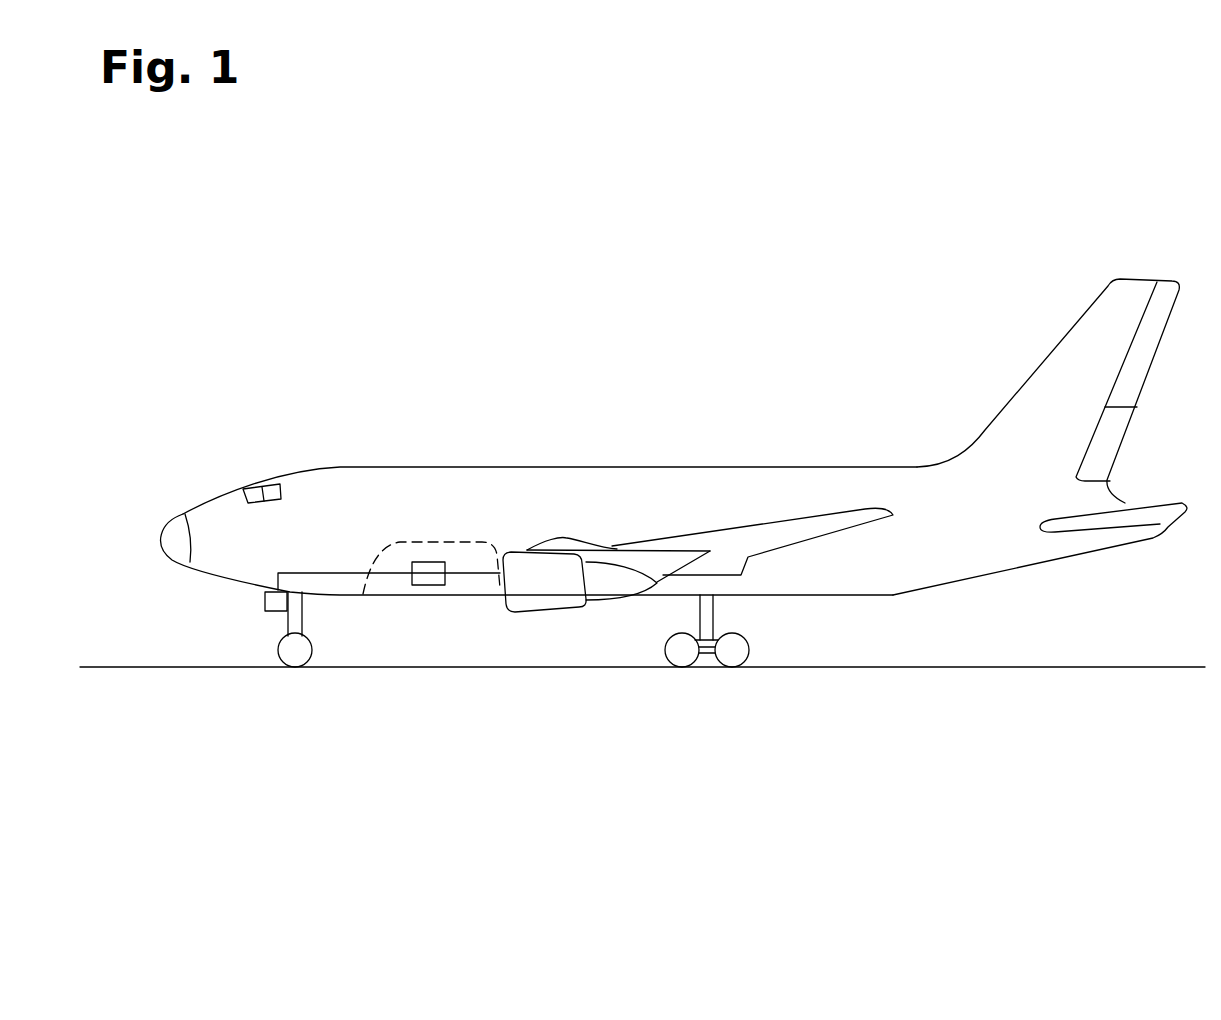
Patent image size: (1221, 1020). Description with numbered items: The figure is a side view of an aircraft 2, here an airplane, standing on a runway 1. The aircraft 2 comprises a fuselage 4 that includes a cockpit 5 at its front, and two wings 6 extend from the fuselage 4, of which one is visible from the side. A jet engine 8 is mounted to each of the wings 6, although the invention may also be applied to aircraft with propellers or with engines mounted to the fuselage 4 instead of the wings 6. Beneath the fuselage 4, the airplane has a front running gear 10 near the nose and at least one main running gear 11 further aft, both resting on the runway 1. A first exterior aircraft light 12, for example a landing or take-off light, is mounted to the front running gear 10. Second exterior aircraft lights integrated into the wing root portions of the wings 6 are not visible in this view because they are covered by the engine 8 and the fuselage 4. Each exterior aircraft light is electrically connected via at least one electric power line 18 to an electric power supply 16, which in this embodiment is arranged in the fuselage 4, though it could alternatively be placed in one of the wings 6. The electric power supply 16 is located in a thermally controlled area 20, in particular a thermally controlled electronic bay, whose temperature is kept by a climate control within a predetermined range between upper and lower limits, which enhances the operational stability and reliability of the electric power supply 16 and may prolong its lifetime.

The runway 1 is at (150, 669).
The aircraft 2 is at (909, 338).
The fuselage 4 is at (546, 495).
The cockpit 5 is at (238, 485).
The wing 6 is at (803, 525).
The jet engine 8 is at (535, 625).
The front running gear 10 is at (326, 665).
The main running gear 11 is at (652, 665).
The first exterior aircraft light 12 is at (266, 600).
The electric power supply 16 is at (434, 575).
The electric power line 18 is at (344, 573).
The thermally controlled area 20 is at (488, 533).